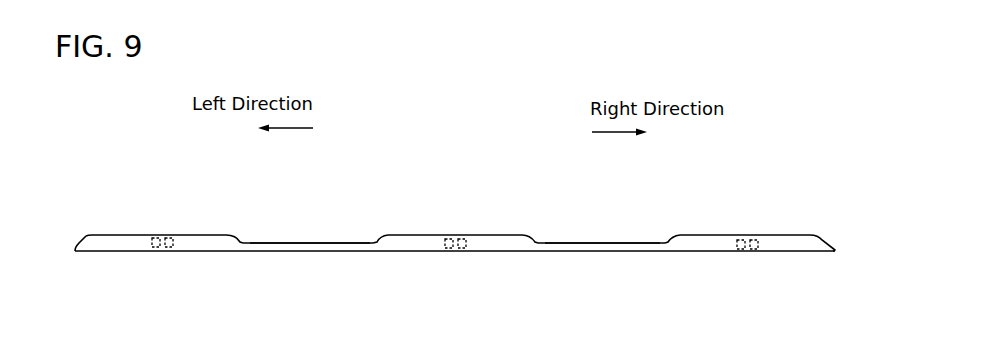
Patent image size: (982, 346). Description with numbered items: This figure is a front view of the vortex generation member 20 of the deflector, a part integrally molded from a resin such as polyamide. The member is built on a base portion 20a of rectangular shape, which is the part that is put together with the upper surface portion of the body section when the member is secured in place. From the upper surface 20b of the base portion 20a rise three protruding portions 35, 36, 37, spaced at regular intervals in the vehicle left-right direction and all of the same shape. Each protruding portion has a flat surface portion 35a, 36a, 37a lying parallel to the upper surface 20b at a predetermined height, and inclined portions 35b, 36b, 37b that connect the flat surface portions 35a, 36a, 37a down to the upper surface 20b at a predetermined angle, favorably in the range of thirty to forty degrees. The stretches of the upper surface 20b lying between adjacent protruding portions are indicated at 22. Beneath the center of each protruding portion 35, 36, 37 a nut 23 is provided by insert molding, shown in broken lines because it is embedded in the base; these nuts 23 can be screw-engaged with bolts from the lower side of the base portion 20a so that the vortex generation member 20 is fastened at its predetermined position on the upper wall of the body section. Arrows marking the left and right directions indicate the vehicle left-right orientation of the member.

The vortex generation member 20 is at (455, 244).
The base portion 20a is at (300, 251).
The upper surface of the base portion 20b is at (303, 243).
The recessed portion 22 is at (325, 238).
The nut 23 is at (151, 249).
The protruding portion 35 is at (744, 238).
The flat surface portion 35a is at (700, 235).
The inclined portion 35b is at (667, 237).
The protruding portion 36 is at (451, 246).
The flat surface portion 36a is at (417, 234).
The inclined portion 36b is at (372, 238).
The protruding portion 37 is at (161, 242).
The flat surface portion 37a is at (184, 235).
The inclined portion 37b is at (84, 237).